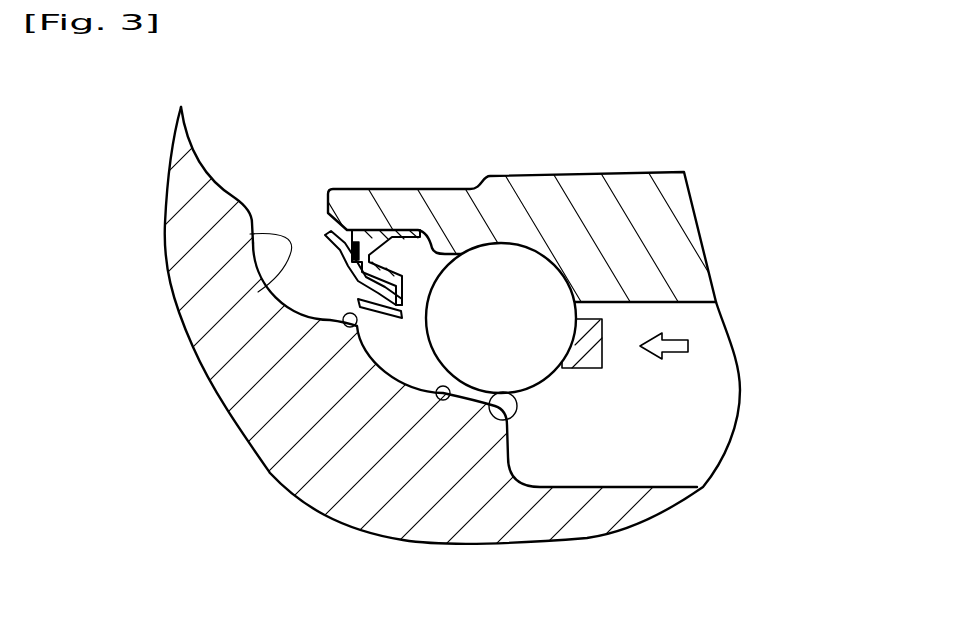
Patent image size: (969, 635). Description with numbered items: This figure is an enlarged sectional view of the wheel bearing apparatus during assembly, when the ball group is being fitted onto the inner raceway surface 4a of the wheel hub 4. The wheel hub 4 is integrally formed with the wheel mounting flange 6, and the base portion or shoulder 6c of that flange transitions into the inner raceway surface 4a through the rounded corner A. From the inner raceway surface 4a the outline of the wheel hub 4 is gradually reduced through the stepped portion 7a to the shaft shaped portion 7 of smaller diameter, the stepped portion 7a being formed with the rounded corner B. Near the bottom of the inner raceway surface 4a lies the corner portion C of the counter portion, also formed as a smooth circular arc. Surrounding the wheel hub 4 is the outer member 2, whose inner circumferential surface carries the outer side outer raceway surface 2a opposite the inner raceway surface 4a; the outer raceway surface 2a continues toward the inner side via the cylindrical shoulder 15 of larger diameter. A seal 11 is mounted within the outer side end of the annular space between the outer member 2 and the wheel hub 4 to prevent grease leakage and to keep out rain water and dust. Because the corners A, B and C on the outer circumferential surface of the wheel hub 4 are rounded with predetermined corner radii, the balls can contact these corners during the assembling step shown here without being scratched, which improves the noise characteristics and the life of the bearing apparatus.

The outer member 2 is at (597, 223).
The outer side outer raceway surface 2a is at (545, 248).
The wheel hub 4 is at (213, 362).
The inner raceway surface 4a is at (337, 378).
The wheel mounting flange 6 is at (183, 183).
The base portion (shoulder) 6c is at (250, 234).
The shaft shaped portion 7 is at (587, 348).
The stepped portion 7a is at (515, 355).
The seal 11 is at (330, 237).
The cylindrical shoulder 15 is at (687, 303).
The corner A is at (344, 307).
The corner B is at (510, 407).
The corner portion C is at (438, 381).